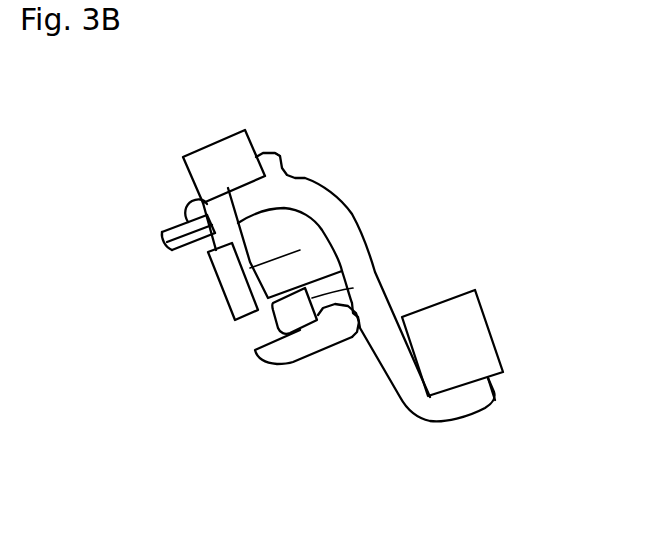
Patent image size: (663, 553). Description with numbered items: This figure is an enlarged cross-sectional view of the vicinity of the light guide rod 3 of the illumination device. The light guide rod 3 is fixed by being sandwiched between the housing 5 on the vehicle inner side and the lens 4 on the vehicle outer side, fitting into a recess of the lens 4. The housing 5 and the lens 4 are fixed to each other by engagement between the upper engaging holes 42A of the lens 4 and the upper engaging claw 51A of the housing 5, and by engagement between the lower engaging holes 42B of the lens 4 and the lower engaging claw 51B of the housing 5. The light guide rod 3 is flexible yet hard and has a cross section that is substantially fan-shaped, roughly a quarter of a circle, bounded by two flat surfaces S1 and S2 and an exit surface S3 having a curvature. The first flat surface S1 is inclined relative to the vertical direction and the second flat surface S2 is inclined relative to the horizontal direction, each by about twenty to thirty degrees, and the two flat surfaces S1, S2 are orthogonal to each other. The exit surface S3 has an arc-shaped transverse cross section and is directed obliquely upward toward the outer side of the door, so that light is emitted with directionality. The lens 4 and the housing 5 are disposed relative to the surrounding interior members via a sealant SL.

The light guide rod 3 is at (297, 257).
The lens 4 is at (176, 252).
The housing 5 is at (193, 210).
The upper engaging holes 42A is at (263, 260).
The lower engaging holes 42B is at (323, 296).
The upper engaging claw 51A is at (218, 222).
The lower engaging claw 51B is at (330, 310).
The first flat surface S1 is at (300, 250).
The second flat surface S2 is at (305, 284).
The exit surface S3 is at (288, 212).
The sealant SL is at (203, 167).